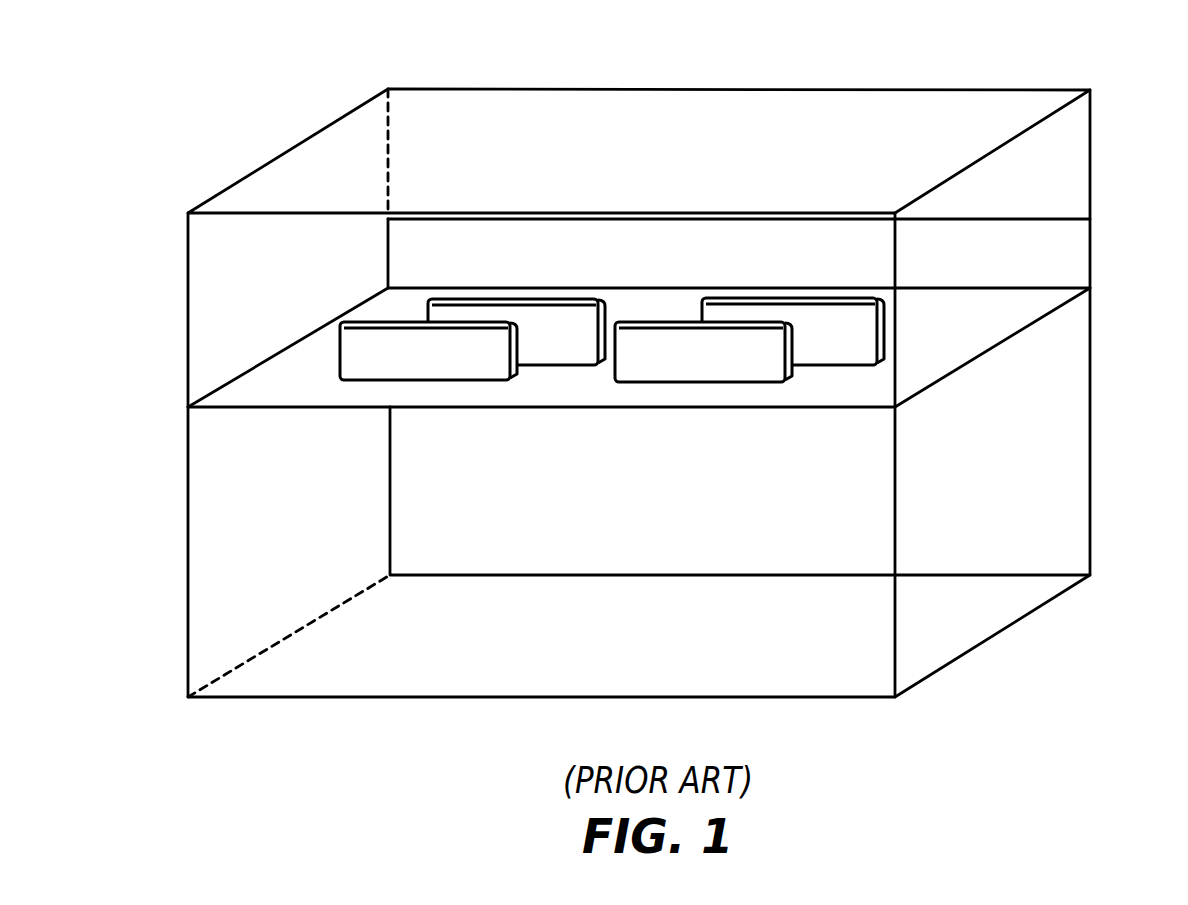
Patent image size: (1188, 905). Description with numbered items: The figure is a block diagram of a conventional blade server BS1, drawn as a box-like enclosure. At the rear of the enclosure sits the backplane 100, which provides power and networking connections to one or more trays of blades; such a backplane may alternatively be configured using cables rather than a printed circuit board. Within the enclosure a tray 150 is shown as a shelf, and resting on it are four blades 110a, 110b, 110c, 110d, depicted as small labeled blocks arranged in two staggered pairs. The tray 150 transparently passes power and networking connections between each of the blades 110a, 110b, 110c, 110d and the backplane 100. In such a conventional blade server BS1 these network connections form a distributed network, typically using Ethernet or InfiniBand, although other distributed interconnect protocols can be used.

The backplane 100 is at (679, 366).
The conventional blade server BS1 is at (968, 90).
The tray 150 is at (334, 402).
The blade 110a is at (457, 375).
The blade 110b is at (588, 359).
The blade 110c is at (732, 376).
The blade 110d is at (862, 359).